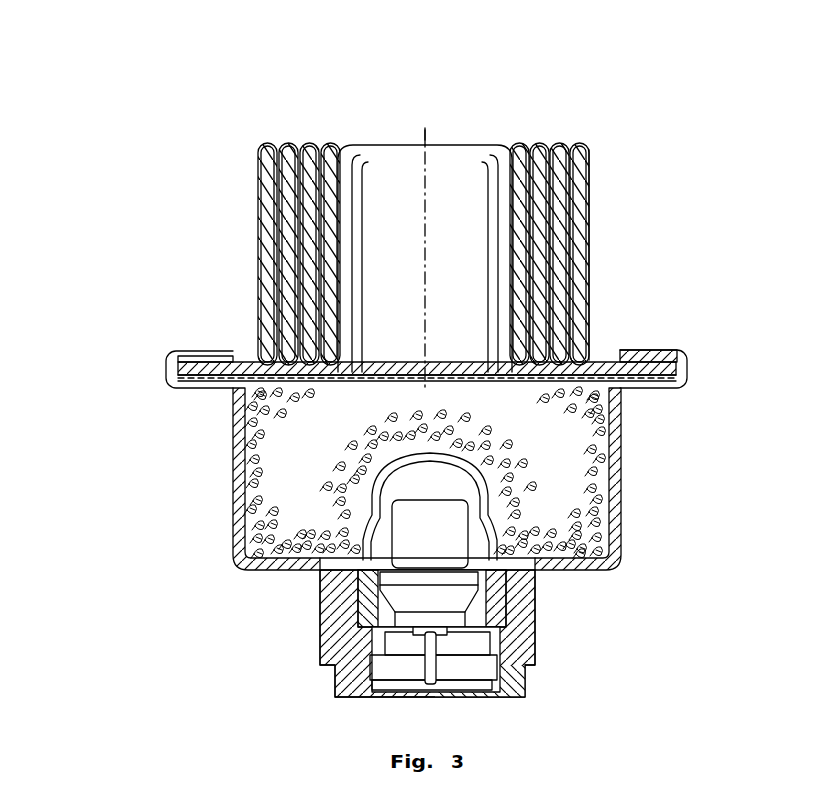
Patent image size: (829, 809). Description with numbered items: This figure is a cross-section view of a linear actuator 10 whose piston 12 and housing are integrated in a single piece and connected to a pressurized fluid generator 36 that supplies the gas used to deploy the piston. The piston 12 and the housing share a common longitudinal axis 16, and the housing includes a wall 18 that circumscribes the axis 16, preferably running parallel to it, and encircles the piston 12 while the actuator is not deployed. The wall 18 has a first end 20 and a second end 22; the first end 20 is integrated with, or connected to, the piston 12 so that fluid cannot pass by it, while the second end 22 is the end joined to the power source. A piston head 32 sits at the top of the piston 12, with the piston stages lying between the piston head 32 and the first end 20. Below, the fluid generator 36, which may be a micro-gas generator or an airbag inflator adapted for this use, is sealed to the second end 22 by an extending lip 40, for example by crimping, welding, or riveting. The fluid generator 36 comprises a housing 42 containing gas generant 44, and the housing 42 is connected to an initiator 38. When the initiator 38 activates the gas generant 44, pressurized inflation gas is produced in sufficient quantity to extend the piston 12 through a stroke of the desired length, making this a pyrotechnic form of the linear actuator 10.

The linear actuator 10 is at (188, 142).
The piston 12 is at (580, 89).
The longitudinal axis 16 is at (420, 128).
The wall 18 is at (585, 227).
The first end 20 is at (592, 152).
The second end 22 is at (605, 340).
The piston head 32 is at (470, 140).
The pressurized fluid generator 36 is at (206, 505).
The initiator 38 is at (432, 548).
The extending lip 40 is at (190, 388).
The housing 42 is at (620, 495).
The gas generant 44 is at (308, 456).